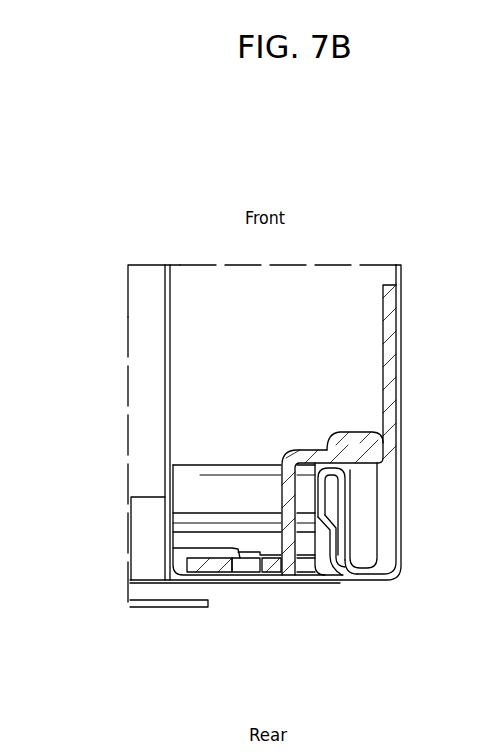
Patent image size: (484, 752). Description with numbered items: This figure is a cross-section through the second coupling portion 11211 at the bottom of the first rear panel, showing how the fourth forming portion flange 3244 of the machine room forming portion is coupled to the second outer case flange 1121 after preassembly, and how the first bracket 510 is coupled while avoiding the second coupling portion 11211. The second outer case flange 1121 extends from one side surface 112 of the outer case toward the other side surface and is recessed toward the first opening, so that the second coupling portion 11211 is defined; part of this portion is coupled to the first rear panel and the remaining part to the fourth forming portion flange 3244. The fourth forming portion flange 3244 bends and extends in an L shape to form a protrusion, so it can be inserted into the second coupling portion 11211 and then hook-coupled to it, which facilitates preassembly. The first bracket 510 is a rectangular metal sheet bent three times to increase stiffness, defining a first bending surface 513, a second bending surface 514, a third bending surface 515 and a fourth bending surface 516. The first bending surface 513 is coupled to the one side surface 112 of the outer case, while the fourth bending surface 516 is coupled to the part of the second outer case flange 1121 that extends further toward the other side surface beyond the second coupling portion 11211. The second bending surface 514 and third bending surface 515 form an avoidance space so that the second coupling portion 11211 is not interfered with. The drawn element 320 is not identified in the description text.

The one side surface of the outer case 112 is at (402, 341).
The second outer case flange 1121 is at (330, 578).
The second coupling portion 11211 is at (331, 497).
The inner frame 320 is at (167, 529).
The fourth forming portion flange 3244 is at (267, 574).
The first bracket 510 is at (392, 402).
The first bending surface 513 is at (392, 302).
The second bending surface 514 is at (392, 438).
The third bending surface 515 is at (280, 491).
The fourth bending surface 516 is at (247, 580).